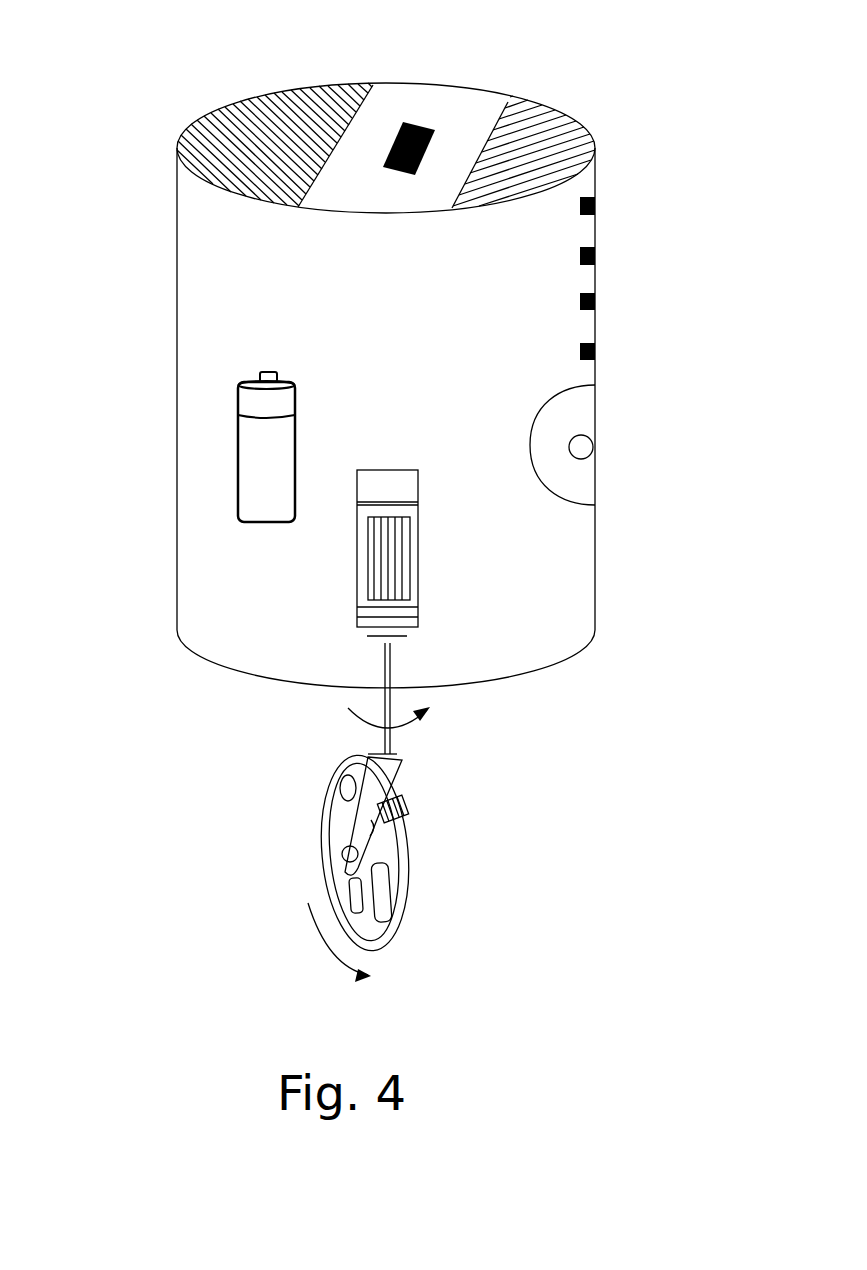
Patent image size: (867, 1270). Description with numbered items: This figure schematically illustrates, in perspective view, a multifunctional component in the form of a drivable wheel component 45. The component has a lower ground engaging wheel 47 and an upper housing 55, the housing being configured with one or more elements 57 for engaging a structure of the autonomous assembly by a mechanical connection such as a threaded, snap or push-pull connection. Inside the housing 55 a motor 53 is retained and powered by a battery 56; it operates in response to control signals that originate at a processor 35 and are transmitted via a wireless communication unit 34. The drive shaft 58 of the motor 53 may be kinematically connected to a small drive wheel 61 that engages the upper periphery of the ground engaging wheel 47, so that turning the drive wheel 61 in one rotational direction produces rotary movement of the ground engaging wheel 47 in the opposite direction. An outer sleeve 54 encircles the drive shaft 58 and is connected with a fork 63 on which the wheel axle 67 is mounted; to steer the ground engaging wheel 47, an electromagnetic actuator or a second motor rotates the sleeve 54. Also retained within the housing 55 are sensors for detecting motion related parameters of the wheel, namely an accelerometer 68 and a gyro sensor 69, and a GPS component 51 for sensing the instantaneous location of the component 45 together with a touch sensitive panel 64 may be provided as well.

The drivable wheel component 45 is at (114, 77).
The housing 55 is at (195, 304).
The processor 35 is at (272, 130).
The wireless communication unit 34 is at (542, 128).
The GPS component 51 is at (596, 200).
The accelerometer 68 is at (596, 250).
The gyro sensor 69 is at (596, 298).
The touch sensitive panel 64 is at (596, 348).
The engaging element 57 is at (580, 423).
The battery 56 is at (253, 450).
The motor 53 is at (358, 533).
The outer sleeve 54 is at (390, 660).
The drive shaft 58 is at (385, 650).
The ground engaging wheel 47 is at (400, 880).
The fork 63 is at (357, 825).
The drive wheel 61 is at (403, 800).
The wheel axle 67 is at (343, 854).